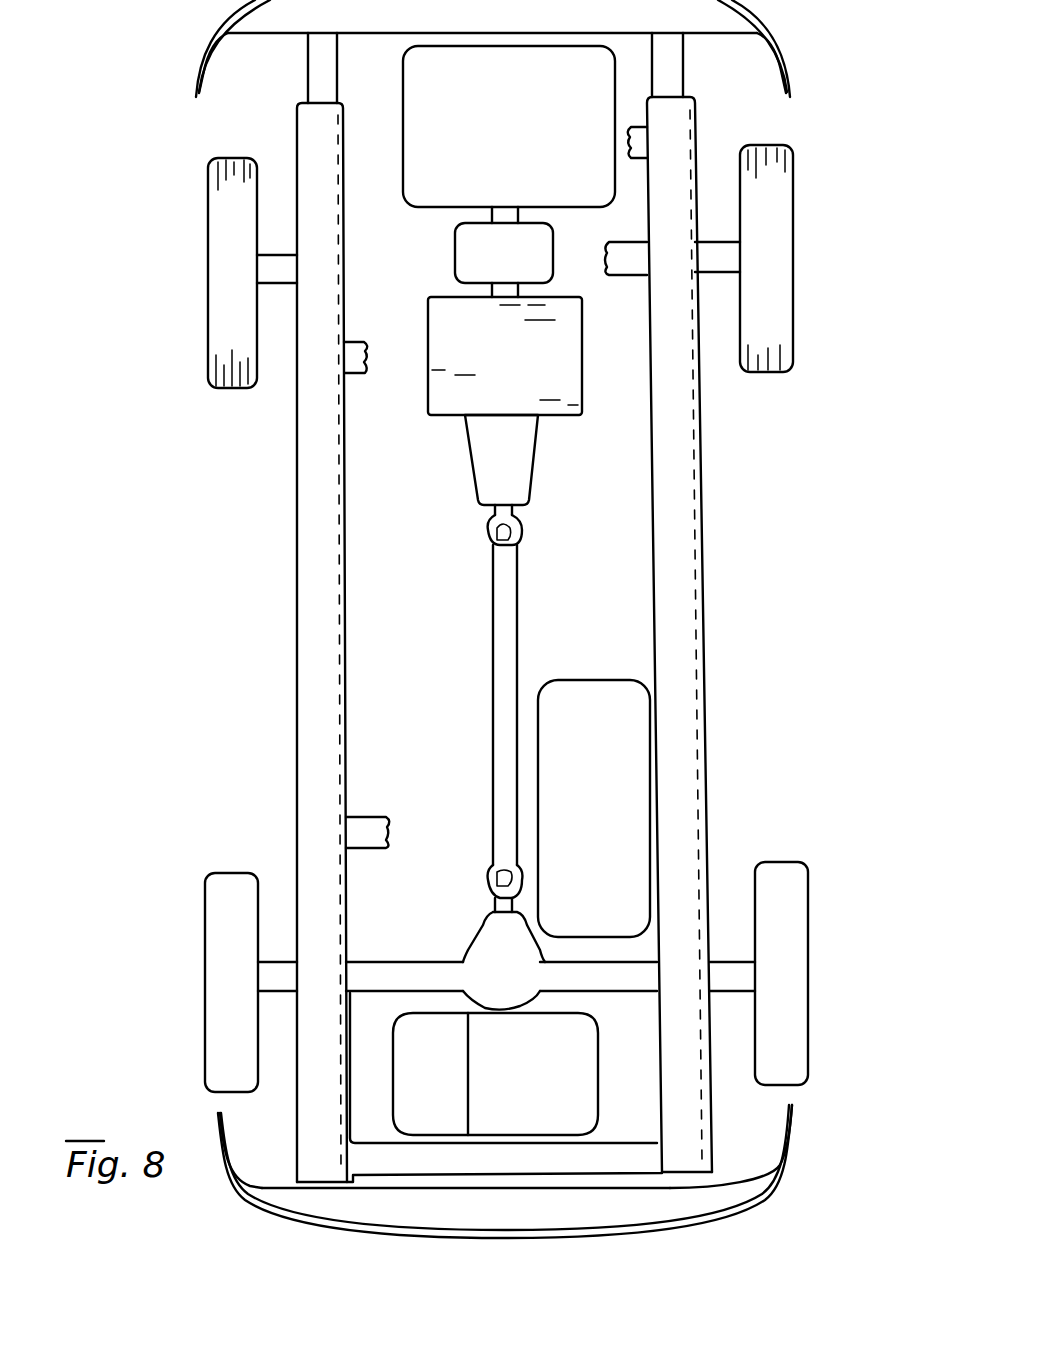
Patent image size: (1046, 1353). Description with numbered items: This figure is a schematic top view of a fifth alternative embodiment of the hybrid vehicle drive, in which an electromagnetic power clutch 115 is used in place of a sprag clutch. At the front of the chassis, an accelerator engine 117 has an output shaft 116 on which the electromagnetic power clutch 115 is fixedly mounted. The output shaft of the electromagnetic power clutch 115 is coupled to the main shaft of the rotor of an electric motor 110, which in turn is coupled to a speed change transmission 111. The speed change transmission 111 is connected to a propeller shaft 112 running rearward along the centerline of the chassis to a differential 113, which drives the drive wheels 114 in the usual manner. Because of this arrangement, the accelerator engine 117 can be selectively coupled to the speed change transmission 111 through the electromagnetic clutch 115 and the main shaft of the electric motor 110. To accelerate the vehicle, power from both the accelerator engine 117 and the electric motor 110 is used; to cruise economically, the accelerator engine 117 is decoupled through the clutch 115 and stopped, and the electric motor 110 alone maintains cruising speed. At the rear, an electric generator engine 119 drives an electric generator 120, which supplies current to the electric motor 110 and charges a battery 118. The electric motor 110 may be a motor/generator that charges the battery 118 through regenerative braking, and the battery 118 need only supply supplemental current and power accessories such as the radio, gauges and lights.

The electric motor 110 is at (520, 366).
The speed change transmission 111 is at (520, 453).
The propeller shaft 112 is at (519, 632).
The differential 113 is at (523, 983).
The drive wheels 114 is at (205, 931).
The electromagnetic power clutch 115 is at (525, 270).
The output shaft 116 is at (518, 211).
The accelerator engine 117 is at (515, 152).
The battery 118 is at (594, 808).
The electric generator engine 119 is at (533, 1074).
The electric generator 120 is at (430, 1074).